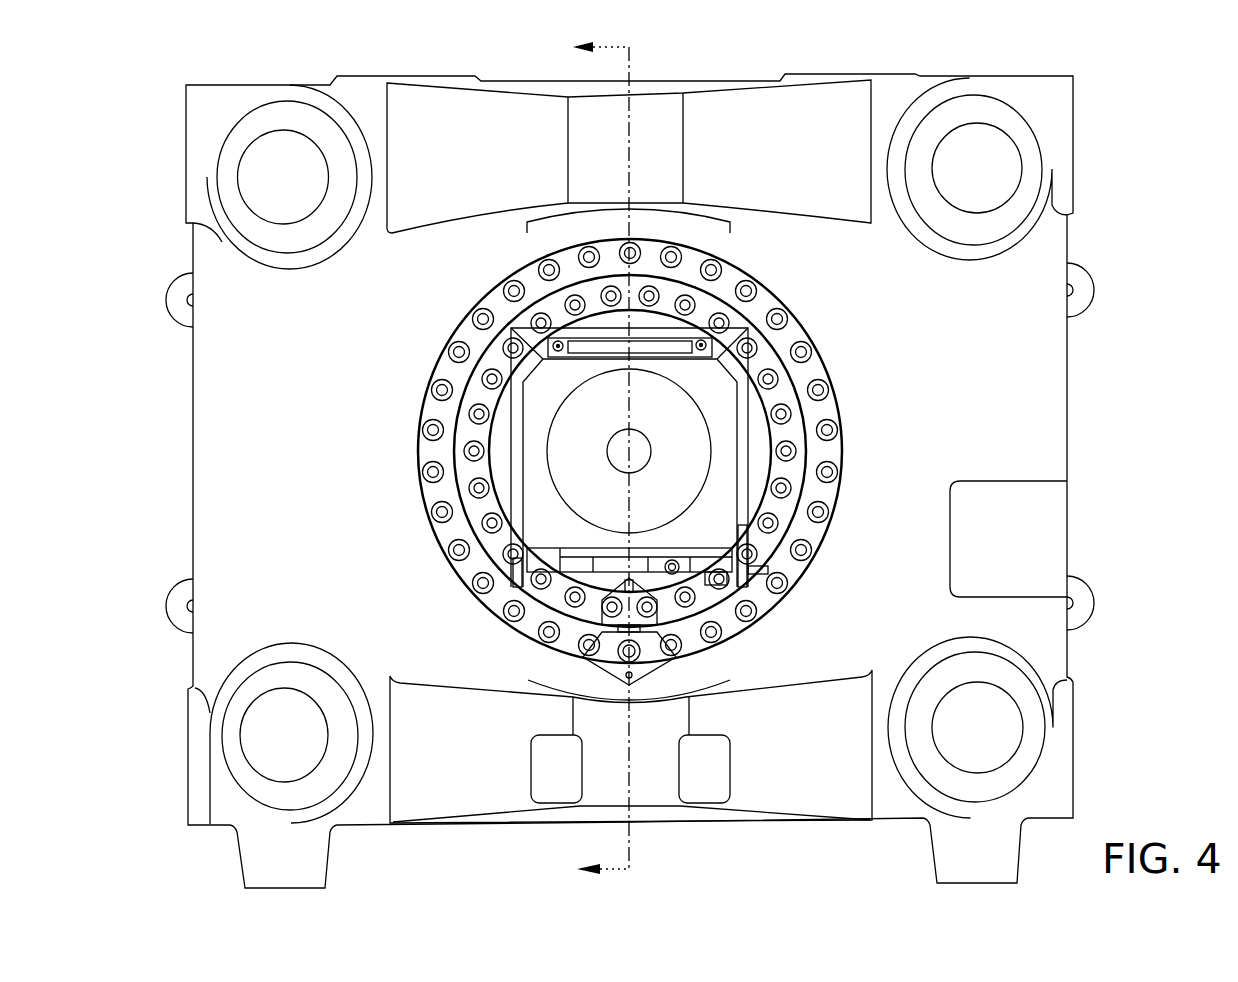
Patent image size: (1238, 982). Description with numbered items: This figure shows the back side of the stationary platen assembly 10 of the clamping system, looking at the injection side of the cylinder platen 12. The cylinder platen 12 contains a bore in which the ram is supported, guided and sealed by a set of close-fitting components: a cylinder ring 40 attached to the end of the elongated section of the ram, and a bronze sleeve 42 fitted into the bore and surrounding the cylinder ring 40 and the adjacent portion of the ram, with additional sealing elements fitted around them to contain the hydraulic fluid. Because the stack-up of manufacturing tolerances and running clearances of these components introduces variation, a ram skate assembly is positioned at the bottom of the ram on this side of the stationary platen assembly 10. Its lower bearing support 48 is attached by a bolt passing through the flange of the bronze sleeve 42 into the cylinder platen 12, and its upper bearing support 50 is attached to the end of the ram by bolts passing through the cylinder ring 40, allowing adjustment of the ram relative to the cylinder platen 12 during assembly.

The stationary platen assembly 10 is at (1147, 176).
The cylinder platen 12 is at (988, 362).
The cylinder ring 40 is at (783, 507).
The bronze sleeve 42 is at (793, 326).
The lower bearing support 48 is at (652, 655).
The upper bearing support 50 is at (578, 643).